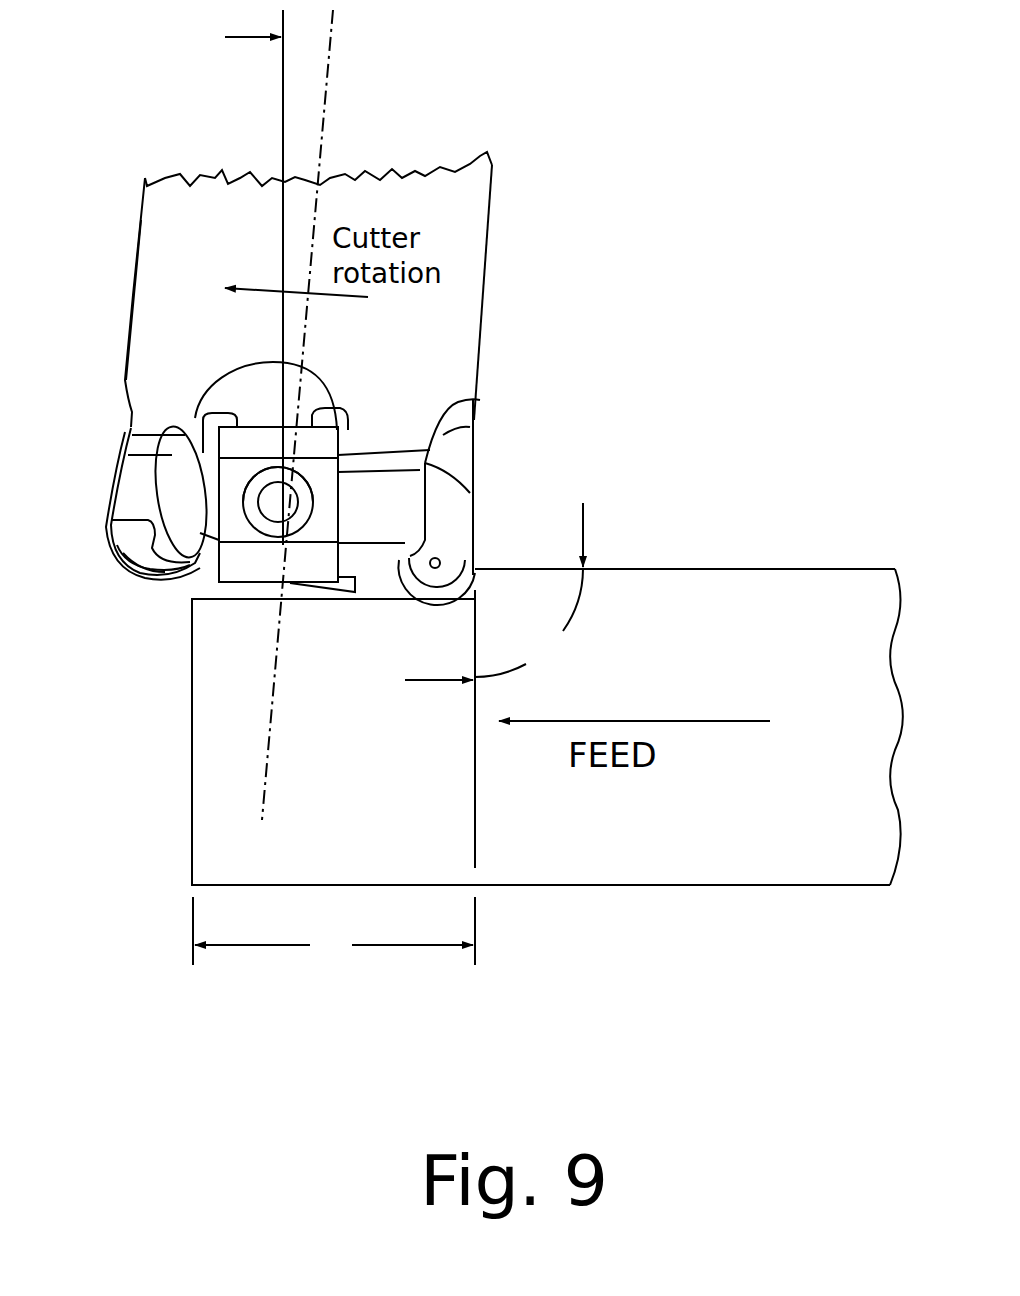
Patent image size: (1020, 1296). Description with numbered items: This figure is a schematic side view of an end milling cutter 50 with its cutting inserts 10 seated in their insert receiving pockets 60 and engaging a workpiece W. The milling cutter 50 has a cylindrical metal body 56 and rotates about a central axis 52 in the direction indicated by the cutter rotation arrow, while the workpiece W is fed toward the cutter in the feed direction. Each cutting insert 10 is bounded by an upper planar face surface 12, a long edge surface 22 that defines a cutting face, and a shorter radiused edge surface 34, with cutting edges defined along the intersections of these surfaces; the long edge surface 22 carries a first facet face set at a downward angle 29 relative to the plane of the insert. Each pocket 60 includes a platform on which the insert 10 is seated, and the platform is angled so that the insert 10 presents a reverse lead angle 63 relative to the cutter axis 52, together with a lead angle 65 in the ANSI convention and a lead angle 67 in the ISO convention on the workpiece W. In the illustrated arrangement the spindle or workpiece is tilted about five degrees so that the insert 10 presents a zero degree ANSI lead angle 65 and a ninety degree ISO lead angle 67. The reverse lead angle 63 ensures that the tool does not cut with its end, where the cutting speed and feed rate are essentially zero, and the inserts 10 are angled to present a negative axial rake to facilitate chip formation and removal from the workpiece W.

The cutting insert 10 is at (99, 561).
The first planar face surface 12 is at (325, 476).
The first edge surface 22 is at (451, 536).
The downward angle 29 is at (215, 470).
The first radiused edge surface 34 is at (132, 580).
The end milling cutter 50 is at (493, 268).
The central axis 52 is at (283, 102).
The cylindrical metal body 56 is at (173, 250).
The insert receiving pocket 60 is at (247, 413).
The reverse lead angle 63 is at (334, 37).
The ANSI lead angle 65 is at (334, 931).
The ISO lead angle 67 is at (494, 591).
The workpiece W is at (790, 630).